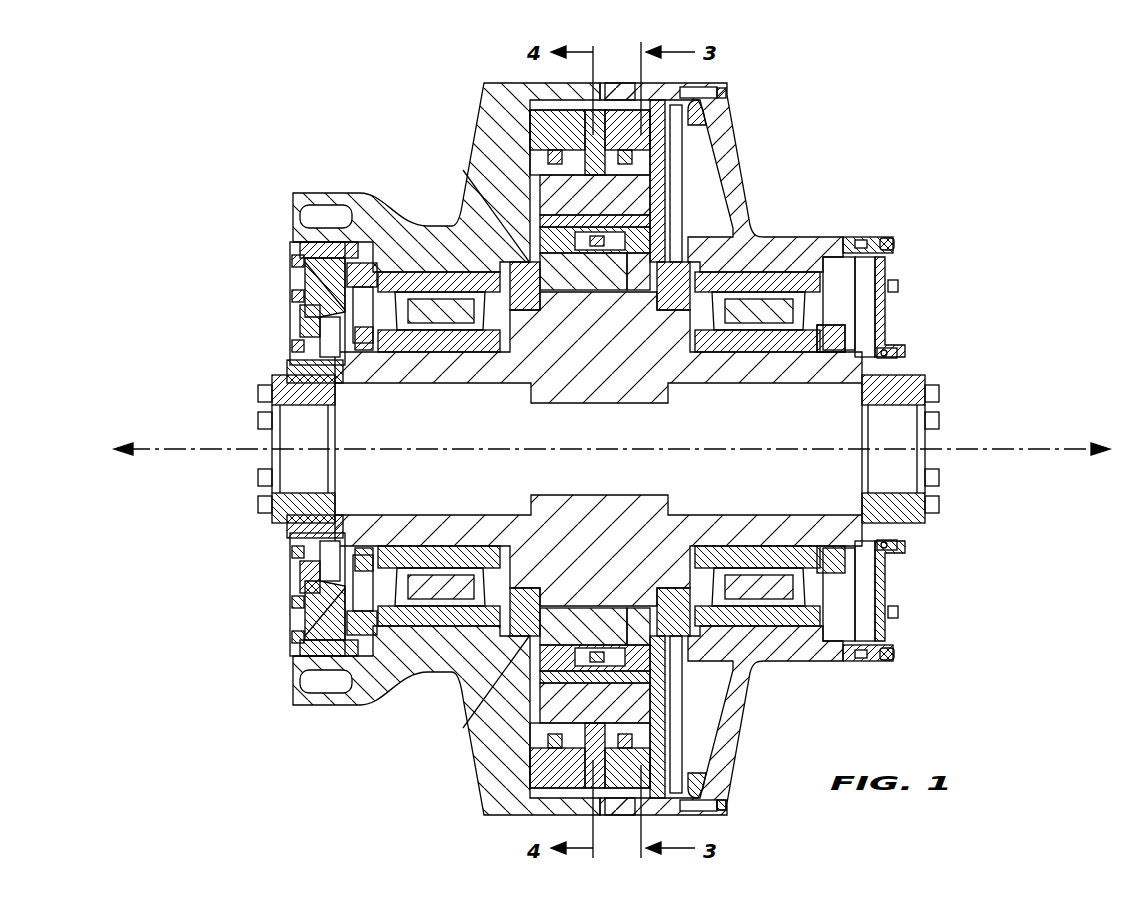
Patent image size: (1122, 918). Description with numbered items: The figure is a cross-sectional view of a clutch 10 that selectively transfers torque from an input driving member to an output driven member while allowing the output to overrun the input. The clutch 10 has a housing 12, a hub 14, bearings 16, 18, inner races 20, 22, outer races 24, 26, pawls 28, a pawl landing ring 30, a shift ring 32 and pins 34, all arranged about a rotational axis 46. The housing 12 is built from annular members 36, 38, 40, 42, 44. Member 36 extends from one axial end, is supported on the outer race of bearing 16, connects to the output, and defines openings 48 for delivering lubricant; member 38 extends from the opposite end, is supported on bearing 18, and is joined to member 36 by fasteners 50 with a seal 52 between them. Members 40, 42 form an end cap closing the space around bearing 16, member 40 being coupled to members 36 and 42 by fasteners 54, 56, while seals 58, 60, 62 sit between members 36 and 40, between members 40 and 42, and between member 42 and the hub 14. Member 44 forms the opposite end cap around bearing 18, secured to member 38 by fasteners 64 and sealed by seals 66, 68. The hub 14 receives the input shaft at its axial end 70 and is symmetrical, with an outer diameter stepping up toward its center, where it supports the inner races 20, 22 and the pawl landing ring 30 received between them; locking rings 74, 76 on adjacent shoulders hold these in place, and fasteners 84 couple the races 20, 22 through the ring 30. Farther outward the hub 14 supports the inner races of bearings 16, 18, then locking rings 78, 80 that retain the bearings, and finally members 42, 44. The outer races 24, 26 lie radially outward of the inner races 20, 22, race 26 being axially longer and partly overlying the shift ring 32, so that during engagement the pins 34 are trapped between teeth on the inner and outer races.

The clutch 10 is at (298, 120).
The housing 12 is at (412, 160).
The hub 14 is at (540, 378).
The bearing 16 is at (435, 338).
The bearing 18 is at (765, 332).
The inner race 20 is at (557, 227).
The inner race 22 is at (645, 220).
The outer race 24 is at (545, 135).
The outer race 26 is at (727, 97).
The pawl 28 is at (635, 685).
The pawl landing ring 30 is at (580, 278).
The shift ring 32 is at (640, 150).
The pin 34 is at (640, 190).
The housing member 36 is at (393, 688).
The housing member 38 is at (775, 648).
The housing member 40 is at (305, 272).
The housing member 42 is at (318, 320).
The housing member 44 is at (885, 305).
The rotational axis 46 is at (1060, 448).
The opening 48 is at (613, 100).
The fastener 50 is at (722, 815).
The seal 52 is at (724, 803).
The fastener 54 is at (335, 248).
The fastener 56 is at (300, 280).
The seal 58 is at (318, 262).
The seal 60 is at (320, 296).
The seal 62 is at (318, 352).
The fastener 64 is at (893, 240).
The seal 66 is at (893, 252).
The seal 68 is at (895, 353).
The axial end 70 is at (932, 546).
The locking ring 74 is at (515, 610).
The locking ring 76 is at (680, 615).
The locking ring 78 is at (355, 558).
The locking ring 80 is at (835, 560).
The fastener 84 is at (676, 240).